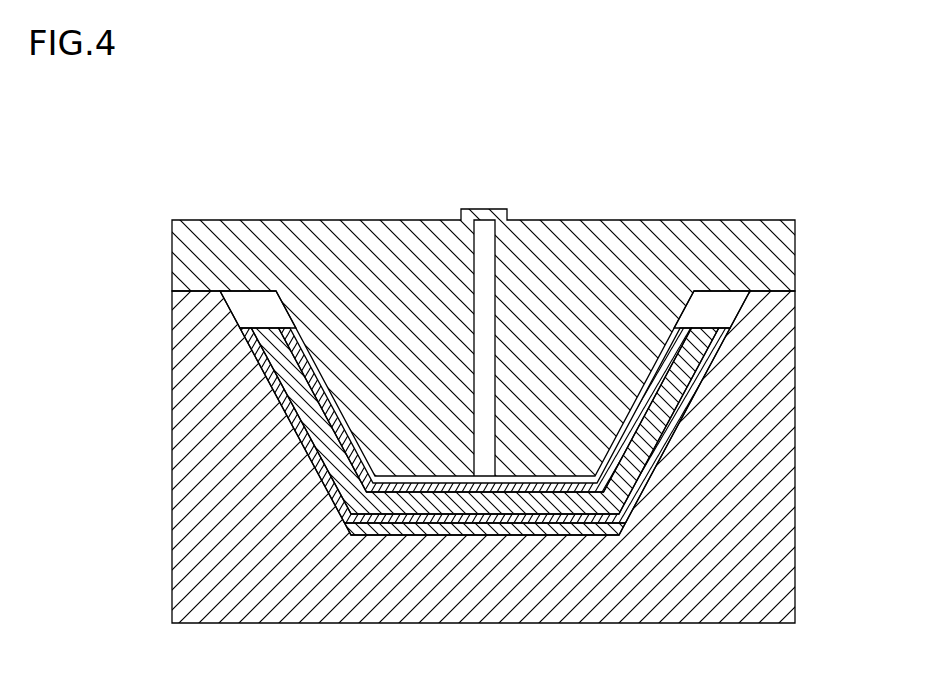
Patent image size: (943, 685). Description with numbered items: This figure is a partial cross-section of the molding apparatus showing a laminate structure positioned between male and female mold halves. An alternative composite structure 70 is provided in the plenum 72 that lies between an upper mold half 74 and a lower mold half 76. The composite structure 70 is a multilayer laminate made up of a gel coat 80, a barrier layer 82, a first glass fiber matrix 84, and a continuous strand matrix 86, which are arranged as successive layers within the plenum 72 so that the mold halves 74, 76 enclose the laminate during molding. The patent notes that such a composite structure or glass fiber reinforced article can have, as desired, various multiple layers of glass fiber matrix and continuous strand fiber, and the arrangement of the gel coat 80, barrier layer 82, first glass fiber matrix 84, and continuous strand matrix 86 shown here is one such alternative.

The composite structure 70 is at (258, 280).
The plenum 72 is at (716, 302).
The upper mold half 74 is at (371, 253).
The lower mold half 76 is at (306, 604).
The gel coat 80 is at (517, 537).
The barrier layer 82 is at (580, 520).
The first glass fiber matrix 84 is at (633, 446).
The continuous strand matrix 86 is at (648, 385).